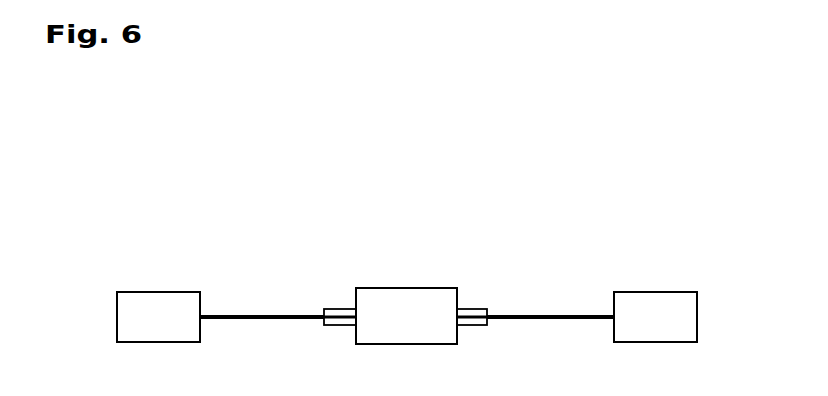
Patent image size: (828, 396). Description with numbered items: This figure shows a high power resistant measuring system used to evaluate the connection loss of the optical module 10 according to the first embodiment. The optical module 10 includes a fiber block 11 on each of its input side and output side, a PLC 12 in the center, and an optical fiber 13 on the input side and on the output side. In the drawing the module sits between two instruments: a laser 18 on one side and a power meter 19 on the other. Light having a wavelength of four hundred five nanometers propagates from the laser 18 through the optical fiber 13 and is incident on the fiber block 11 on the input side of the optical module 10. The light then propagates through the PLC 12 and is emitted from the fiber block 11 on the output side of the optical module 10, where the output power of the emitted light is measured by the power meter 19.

The optical module 10 is at (405, 208).
The fiber block 11 is at (337, 306).
The PLC 12 is at (405, 298).
The optical fiber 13 is at (258, 306).
The laser 18 is at (162, 300).
The power meter 19 is at (650, 302).